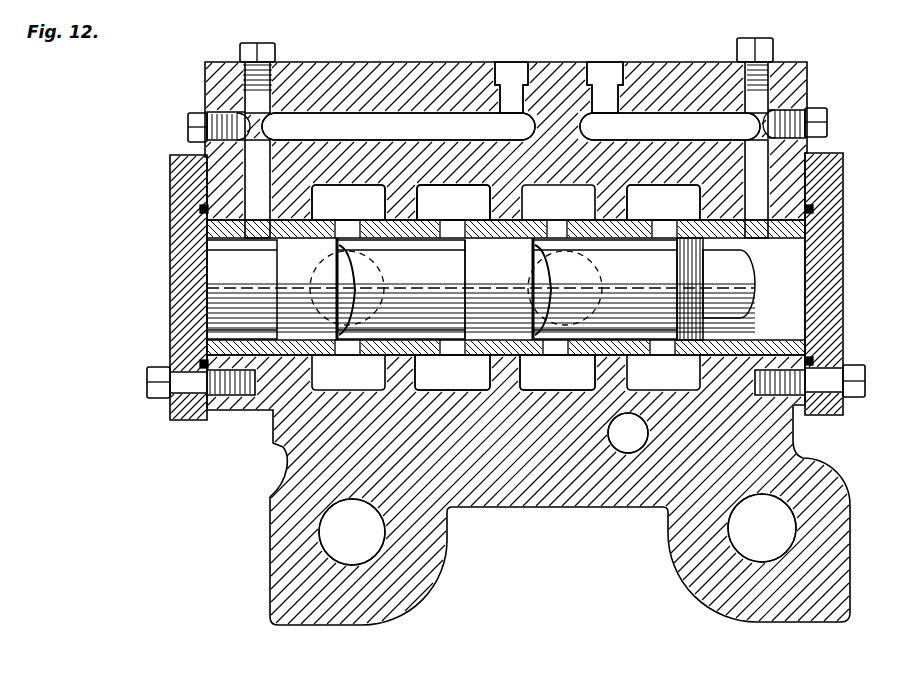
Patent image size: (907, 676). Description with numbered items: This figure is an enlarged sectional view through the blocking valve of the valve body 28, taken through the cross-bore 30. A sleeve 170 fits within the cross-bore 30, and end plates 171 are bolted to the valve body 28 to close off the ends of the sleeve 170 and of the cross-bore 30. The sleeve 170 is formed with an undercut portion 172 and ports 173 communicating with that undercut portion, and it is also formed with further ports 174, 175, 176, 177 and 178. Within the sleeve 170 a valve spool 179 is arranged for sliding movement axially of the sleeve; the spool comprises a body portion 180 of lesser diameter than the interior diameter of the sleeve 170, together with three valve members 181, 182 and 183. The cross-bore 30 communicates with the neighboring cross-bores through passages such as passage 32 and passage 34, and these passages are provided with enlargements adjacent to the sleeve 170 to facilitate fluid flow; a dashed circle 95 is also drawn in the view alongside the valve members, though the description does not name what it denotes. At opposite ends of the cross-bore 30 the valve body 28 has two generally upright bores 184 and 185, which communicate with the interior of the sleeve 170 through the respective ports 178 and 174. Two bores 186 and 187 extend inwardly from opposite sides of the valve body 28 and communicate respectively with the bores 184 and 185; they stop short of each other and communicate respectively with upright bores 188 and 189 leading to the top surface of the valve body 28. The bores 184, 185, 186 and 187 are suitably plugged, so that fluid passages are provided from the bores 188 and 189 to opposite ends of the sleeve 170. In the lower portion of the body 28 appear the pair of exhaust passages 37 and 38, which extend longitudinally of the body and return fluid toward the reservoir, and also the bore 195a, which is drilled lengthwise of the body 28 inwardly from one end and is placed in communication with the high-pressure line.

The valve body 28 is at (196, 82).
The cross-bore 30 is at (208, 343).
The passage 32 is at (433, 190).
The passage 34 is at (322, 260).
The exhaust passage 37 is at (325, 527).
The exhaust passage 38 is at (733, 538).
The rotor circle 95 is at (565, 250).
The sleeve 170 is at (218, 227).
The end plates 171 is at (187, 320).
The undercut portion 172 is at (526, 351).
The ports 173 is at (562, 339).
The port 174 is at (757, 227).
The port 175 is at (667, 228).
The port 176 is at (453, 230).
The port 177 is at (348, 230).
The port 178 is at (262, 225).
The valve spool 179 is at (221, 280).
The body portion 180 is at (428, 300).
The valve member 181 is at (327, 279).
The valve member 182 is at (480, 274).
The valve member 183 is at (685, 268).
The upright bore 184 is at (248, 153).
The upright bore 185 is at (757, 158).
The bore 186 is at (302, 118).
The bore 187 is at (680, 118).
The upright bore 188 is at (507, 72).
The upright bore 189 is at (605, 72).
The bore 195a is at (622, 447).